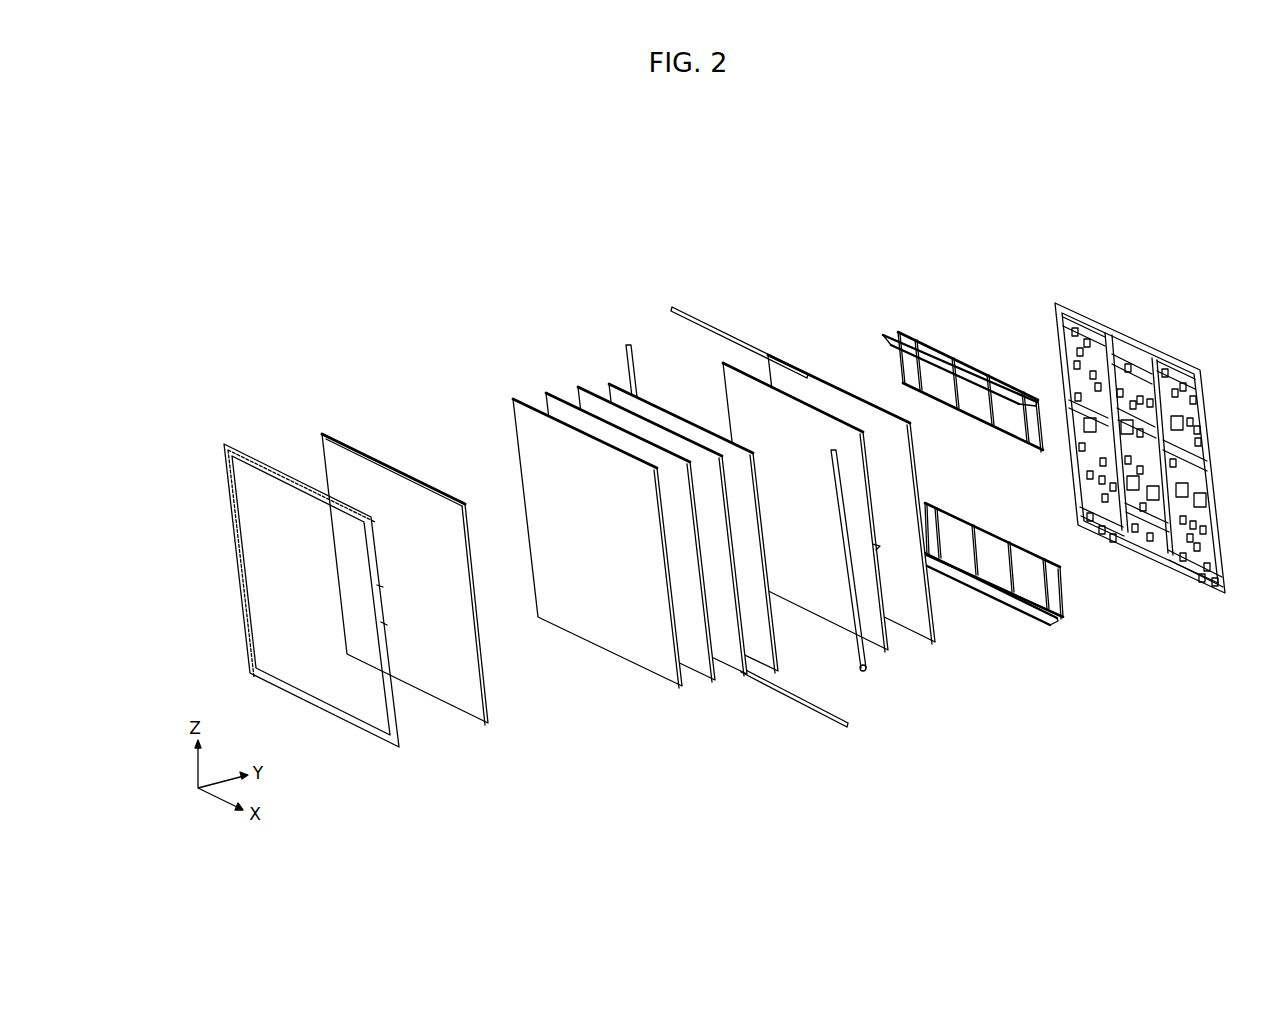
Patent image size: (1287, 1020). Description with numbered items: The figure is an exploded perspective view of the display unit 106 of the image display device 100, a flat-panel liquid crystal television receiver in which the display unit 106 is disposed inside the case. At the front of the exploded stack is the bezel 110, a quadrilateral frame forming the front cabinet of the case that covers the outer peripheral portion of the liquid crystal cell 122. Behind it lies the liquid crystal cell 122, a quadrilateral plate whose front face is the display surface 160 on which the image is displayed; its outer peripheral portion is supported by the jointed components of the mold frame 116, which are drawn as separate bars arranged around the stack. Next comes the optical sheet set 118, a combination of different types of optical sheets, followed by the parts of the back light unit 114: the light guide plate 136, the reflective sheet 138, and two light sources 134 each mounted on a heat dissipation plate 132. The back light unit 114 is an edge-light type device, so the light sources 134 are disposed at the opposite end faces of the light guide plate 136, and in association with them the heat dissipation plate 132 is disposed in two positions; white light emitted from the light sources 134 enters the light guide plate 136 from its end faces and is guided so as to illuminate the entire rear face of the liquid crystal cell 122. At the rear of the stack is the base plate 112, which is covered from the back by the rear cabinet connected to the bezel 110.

The image display device 100 is at (232, 257).
The display unit 106 is at (840, 203).
The bezel 110 is at (255, 457).
The base plate 112 is at (1150, 345).
The back light unit 114 is at (890, 270).
The mold frame 116 is at (627, 362).
The optical sheet set 118 is at (613, 386).
The liquid crystal cell 122 is at (358, 452).
The heat dissipation plate 132 is at (970, 407).
The light source 134 is at (965, 362).
The light guide plate 136 is at (728, 395).
The reflective sheet 138 is at (817, 387).
The display surface 160 is at (430, 497).